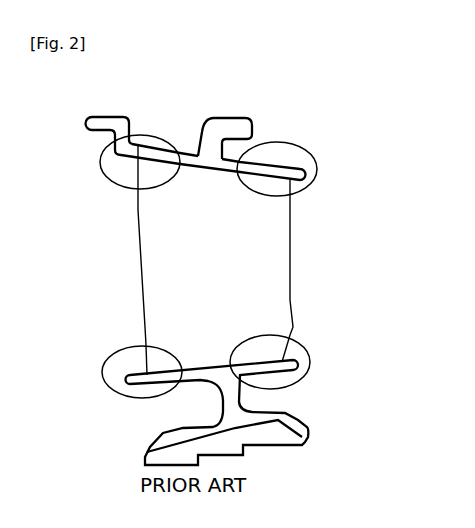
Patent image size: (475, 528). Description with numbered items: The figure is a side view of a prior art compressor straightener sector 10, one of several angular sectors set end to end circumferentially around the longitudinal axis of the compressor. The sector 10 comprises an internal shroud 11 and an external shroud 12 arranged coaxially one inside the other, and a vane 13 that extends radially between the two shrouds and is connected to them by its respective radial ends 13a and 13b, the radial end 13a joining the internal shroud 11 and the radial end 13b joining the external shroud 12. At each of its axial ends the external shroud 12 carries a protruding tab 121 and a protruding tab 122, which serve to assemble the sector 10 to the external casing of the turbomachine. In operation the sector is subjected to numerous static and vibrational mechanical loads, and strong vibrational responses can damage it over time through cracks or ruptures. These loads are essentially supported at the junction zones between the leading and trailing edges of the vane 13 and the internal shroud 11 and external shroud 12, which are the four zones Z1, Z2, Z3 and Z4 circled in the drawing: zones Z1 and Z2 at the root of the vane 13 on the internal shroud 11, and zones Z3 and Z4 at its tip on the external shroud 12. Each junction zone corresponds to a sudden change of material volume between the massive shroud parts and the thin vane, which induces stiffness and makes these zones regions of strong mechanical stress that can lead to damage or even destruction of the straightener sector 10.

The straightener sector 10 is at (390, 170).
The internal shroud 11 is at (297, 371).
The external shroud 12 is at (305, 173).
The protruding tab 121 is at (103, 120).
The protruding tab 122 is at (233, 124).
The vane 13 is at (268, 260).
The radial end 13a is at (147, 370).
The radial end 13b is at (140, 157).
The junction zone Z1 is at (105, 383).
The junction zone Z2 is at (298, 342).
The junction zone Z3 is at (100, 167).
The junction zone Z4 is at (313, 152).